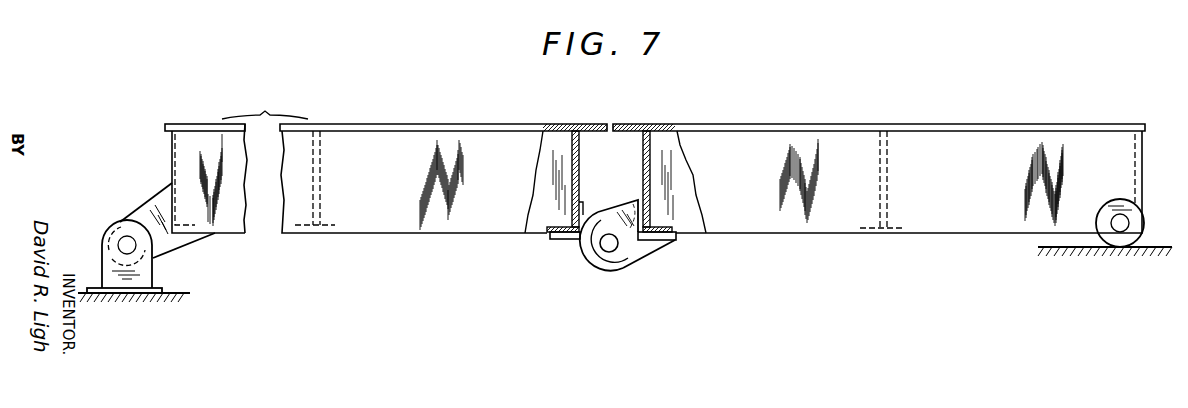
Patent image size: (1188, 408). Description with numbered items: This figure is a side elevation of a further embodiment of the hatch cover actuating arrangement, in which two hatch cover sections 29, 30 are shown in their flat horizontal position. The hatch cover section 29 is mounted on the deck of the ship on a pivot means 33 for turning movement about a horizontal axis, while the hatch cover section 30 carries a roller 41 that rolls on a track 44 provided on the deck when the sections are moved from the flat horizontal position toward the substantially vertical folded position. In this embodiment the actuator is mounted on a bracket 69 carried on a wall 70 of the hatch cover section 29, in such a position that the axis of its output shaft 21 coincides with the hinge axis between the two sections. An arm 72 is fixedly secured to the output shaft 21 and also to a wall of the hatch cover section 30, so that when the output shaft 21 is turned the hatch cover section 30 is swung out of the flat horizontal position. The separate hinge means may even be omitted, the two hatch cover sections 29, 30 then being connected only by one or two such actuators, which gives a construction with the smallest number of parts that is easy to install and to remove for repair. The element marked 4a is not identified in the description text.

The hatch cover section 29 is at (448, 127).
The hatch cover section 30 is at (766, 126).
The wall 70 is at (580, 163).
The bracket 69 is at (572, 238).
The hinge 4a is at (594, 273).
The output shaft 21 is at (616, 250).
The arm 72 is at (658, 247).
The roller 41 is at (1142, 229).
The track 44 is at (1060, 245).
The pivot means 33 is at (145, 295).